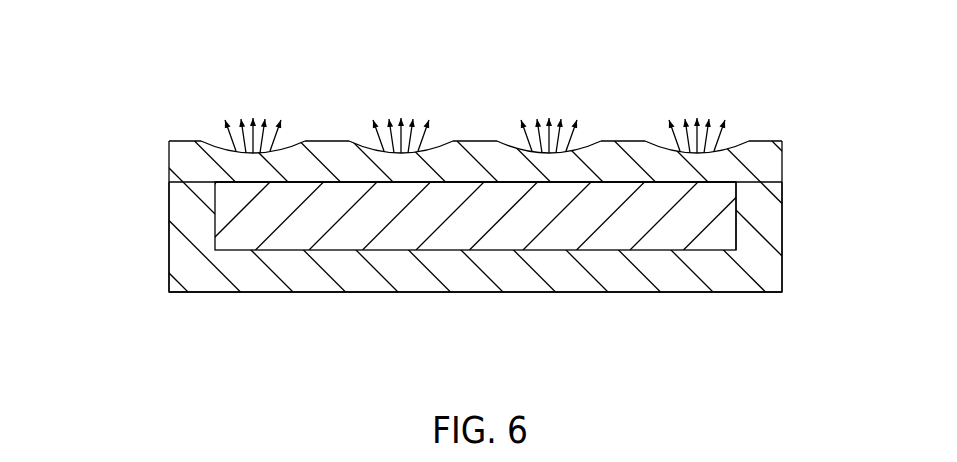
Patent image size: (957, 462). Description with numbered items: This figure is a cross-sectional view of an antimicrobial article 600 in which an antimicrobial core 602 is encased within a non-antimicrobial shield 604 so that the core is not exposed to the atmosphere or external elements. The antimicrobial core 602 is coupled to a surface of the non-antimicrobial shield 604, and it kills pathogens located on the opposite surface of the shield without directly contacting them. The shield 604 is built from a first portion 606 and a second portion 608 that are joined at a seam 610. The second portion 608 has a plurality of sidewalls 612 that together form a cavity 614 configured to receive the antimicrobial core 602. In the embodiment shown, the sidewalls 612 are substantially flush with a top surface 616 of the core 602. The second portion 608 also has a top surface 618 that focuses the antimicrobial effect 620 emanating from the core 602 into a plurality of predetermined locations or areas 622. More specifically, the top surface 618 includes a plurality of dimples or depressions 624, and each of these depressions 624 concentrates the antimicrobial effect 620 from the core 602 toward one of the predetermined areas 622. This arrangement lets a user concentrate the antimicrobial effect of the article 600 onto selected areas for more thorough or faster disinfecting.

The antimicrobial article 600 is at (185, 73).
The antimicrobial core 602 is at (660, 237).
The non-antimicrobial shield 604 is at (142, 300).
The first portion 606 is at (257, 275).
The second portion 608 is at (770, 157).
The seam 610 is at (173, 183).
The sidewalls 612 is at (185, 247).
The cavity 614 is at (737, 237).
The top surface of core 616 is at (548, 183).
The top surface 618 is at (761, 138).
The antimicrobial effect 620 is at (216, 148).
The predetermined locations or areas 622 is at (233, 115).
The dimples or depressions 624 is at (207, 142).